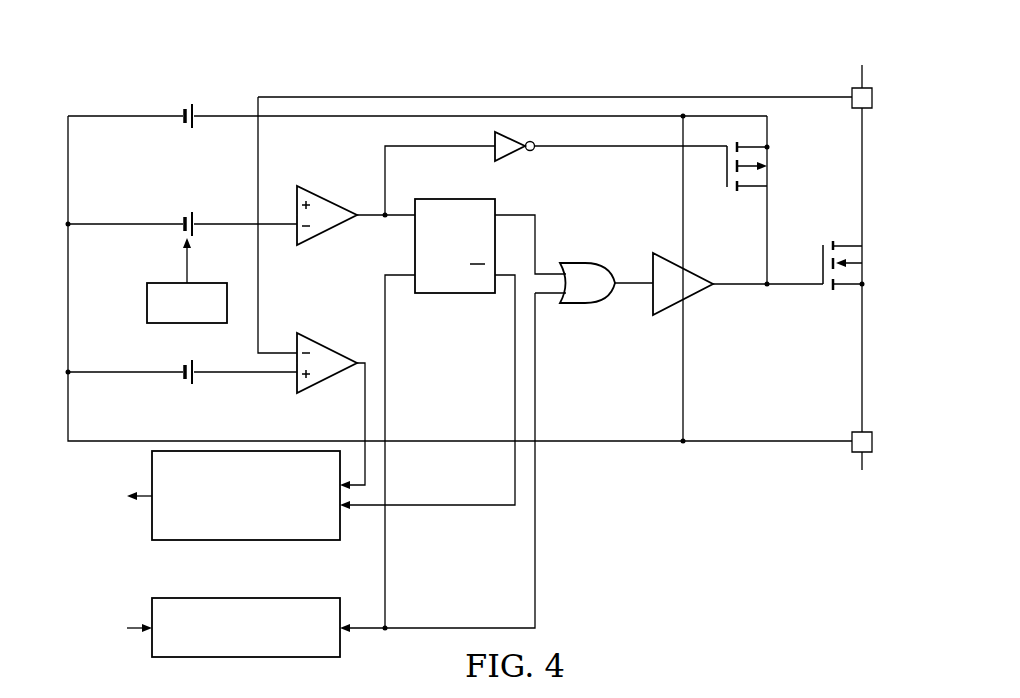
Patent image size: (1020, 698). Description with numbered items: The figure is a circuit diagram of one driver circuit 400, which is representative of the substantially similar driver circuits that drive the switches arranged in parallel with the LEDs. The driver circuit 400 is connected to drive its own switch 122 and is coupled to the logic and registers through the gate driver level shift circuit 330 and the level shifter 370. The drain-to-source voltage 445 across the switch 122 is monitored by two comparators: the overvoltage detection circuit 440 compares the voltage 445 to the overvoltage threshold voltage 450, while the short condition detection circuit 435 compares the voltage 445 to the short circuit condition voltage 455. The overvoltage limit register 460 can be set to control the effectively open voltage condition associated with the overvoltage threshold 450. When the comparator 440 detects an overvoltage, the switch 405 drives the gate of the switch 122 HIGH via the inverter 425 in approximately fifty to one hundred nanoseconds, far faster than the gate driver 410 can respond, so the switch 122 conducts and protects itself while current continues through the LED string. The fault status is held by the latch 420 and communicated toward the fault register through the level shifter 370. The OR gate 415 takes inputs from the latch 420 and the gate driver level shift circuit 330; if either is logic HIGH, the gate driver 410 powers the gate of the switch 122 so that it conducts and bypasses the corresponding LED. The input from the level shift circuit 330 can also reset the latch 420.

The driver circuit 400 is at (733, 580).
The voltage across the switch 445 is at (189, 127).
The overvoltage threshold voltage 450 is at (185, 234).
The short circuit condition voltage 455 is at (188, 382).
The overvoltage limit register 460 is at (147, 305).
The overvoltage detection circuit 440 is at (322, 197).
The short condition detection circuit 435 is at (322, 345).
The latch 420 is at (455, 199).
The inverter 425 is at (529, 153).
The OR gate 415 is at (588, 262).
The gate driver 410 is at (697, 294).
The switch 405 is at (727, 176).
The switch 122 is at (823, 257).
The level shifter 370 is at (216, 541).
The gate driver level shift circuit 330 is at (275, 598).